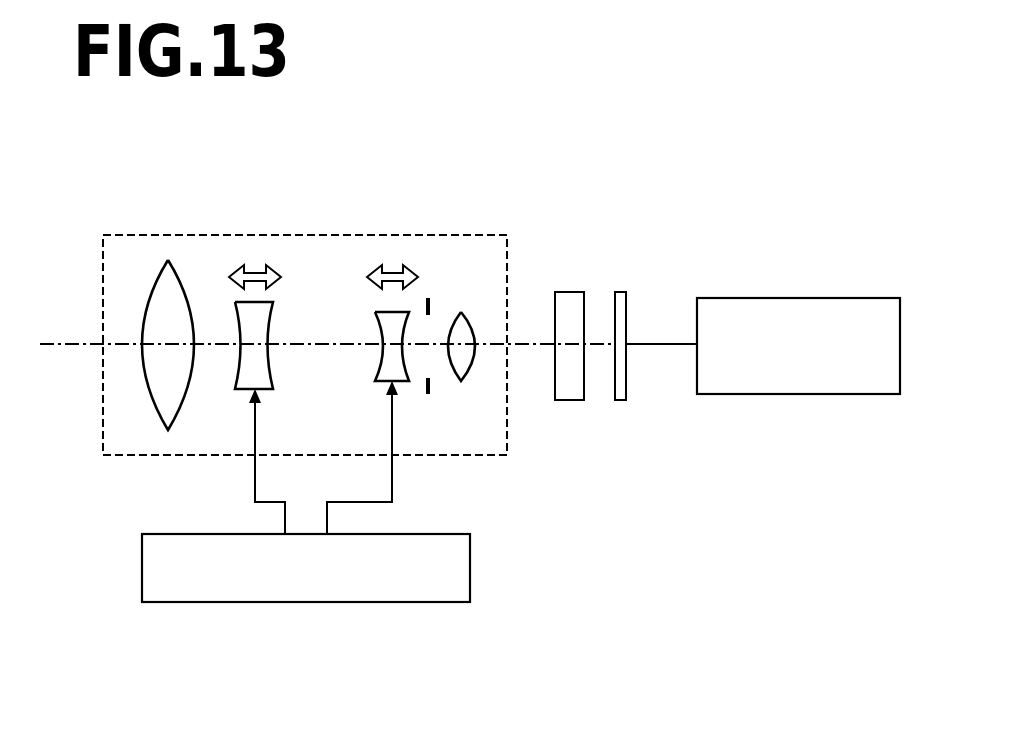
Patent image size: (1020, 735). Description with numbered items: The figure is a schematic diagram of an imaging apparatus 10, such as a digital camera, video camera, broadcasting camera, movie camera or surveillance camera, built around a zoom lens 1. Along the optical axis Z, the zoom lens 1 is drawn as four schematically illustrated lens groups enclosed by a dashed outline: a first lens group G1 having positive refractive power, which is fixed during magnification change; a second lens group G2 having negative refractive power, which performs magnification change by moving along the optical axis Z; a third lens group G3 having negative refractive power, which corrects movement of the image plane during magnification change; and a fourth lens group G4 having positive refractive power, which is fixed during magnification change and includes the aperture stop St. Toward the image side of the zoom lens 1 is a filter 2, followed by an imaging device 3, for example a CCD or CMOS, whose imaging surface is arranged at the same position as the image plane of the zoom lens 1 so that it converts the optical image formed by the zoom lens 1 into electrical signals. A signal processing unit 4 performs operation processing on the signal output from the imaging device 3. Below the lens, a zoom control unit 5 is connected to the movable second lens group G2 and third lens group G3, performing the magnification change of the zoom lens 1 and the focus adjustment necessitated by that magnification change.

The imaging apparatus 10 is at (516, 108).
The zoom lens 1 is at (103, 434).
The optical axis Z is at (62, 343).
The first lens group G1 is at (183, 288).
The second lens group G2 is at (270, 318).
The third lens group G3 is at (382, 325).
The aperture stop St is at (432, 306).
The fourth lens group G4 is at (472, 328).
The filter 2 is at (572, 292).
The imaging device 3 is at (620, 292).
The signal processing unit 4 is at (880, 298).
The zoom control unit 5 is at (445, 603).